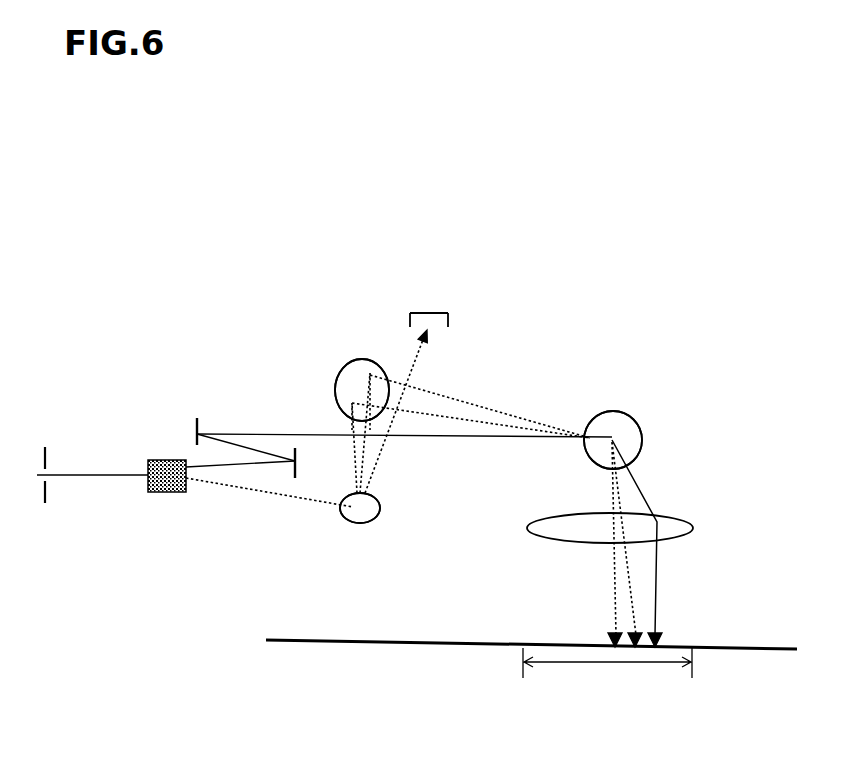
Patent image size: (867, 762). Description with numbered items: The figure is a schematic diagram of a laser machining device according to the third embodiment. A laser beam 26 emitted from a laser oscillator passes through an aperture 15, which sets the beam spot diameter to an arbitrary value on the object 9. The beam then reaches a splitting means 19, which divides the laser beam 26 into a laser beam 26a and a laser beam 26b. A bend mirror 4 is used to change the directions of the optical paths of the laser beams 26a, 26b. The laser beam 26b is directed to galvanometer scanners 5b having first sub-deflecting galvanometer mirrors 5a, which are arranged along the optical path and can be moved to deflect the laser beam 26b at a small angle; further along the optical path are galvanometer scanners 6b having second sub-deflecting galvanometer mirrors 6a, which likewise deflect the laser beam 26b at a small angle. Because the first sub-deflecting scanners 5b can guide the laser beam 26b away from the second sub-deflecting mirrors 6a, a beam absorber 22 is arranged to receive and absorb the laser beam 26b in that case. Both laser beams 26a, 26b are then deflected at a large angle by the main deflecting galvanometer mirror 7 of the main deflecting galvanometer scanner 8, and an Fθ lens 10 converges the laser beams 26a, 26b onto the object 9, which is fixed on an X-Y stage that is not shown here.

The bend mirror 4 is at (195, 425).
The first sub-deflecting galvanometer mirror 5a is at (343, 518).
The first sub-deflecting galvanometer scanner 5b is at (348, 523).
The second sub-deflecting galvanometer mirror 6a is at (335, 382).
The second sub-deflecting galvanometer scanner 6b is at (350, 360).
The main deflecting galvanometer mirror 7 is at (620, 412).
The main deflecting galvanometer scanner 8 is at (641, 447).
The object 9 is at (460, 642).
The Fθ lens 10 is at (678, 522).
The aperture 15 is at (45, 503).
The splitting means 19 is at (160, 492).
The beam absorber 22 is at (428, 312).
The laser beam 26 is at (75, 473).
The laser beam 26a is at (260, 432).
The laser beam 26b is at (248, 492).